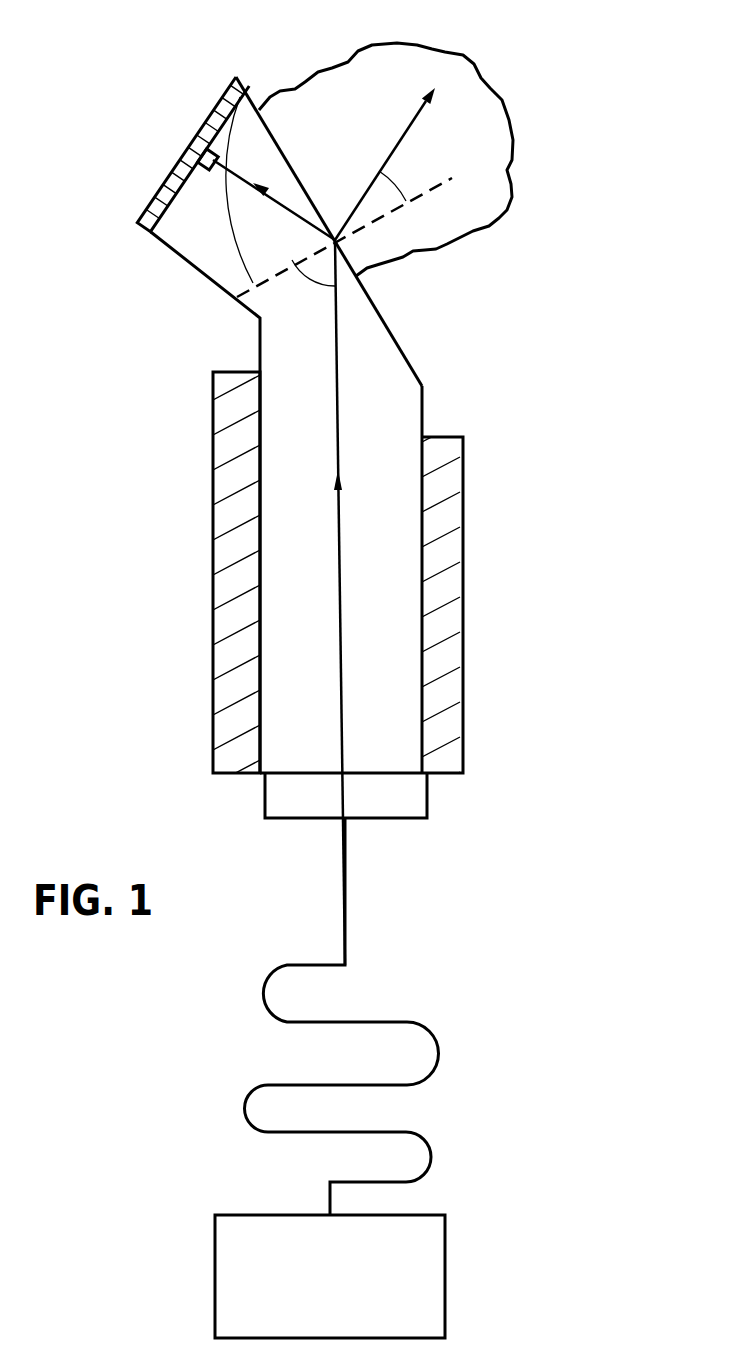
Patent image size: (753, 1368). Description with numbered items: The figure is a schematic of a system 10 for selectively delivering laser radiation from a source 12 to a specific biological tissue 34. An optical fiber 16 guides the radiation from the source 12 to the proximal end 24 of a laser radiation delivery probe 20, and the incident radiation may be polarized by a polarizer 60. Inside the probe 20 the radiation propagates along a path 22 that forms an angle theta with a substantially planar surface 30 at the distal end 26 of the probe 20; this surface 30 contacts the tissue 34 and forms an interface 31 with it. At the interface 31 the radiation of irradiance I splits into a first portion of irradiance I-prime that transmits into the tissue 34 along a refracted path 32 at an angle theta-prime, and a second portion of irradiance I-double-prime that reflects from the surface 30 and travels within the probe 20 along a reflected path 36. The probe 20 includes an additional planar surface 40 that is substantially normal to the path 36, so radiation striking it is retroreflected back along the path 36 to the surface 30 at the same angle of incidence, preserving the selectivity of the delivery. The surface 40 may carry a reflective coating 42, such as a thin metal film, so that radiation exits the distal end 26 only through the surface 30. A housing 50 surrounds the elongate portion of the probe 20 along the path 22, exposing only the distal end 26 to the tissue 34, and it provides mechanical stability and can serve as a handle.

The system 10 is at (634, 741).
The source 12 is at (445, 1250).
The optical fiber 16 is at (437, 1040).
The laser radiation delivery probe 20 is at (499, 595).
The path 22 is at (338, 595).
The proximal end 24 is at (321, 750).
The distal end 26 is at (392, 393).
The surface 30 is at (390, 326).
The interface 31 is at (280, 128).
The refracted path 32 is at (380, 177).
The biological tissue 34 is at (381, 107).
The reflected path 36 is at (232, 75).
The surface 40 is at (142, 213).
The reflective coating 42 is at (180, 157).
The housing 50 is at (213, 532).
The polarizer 60 is at (427, 797).